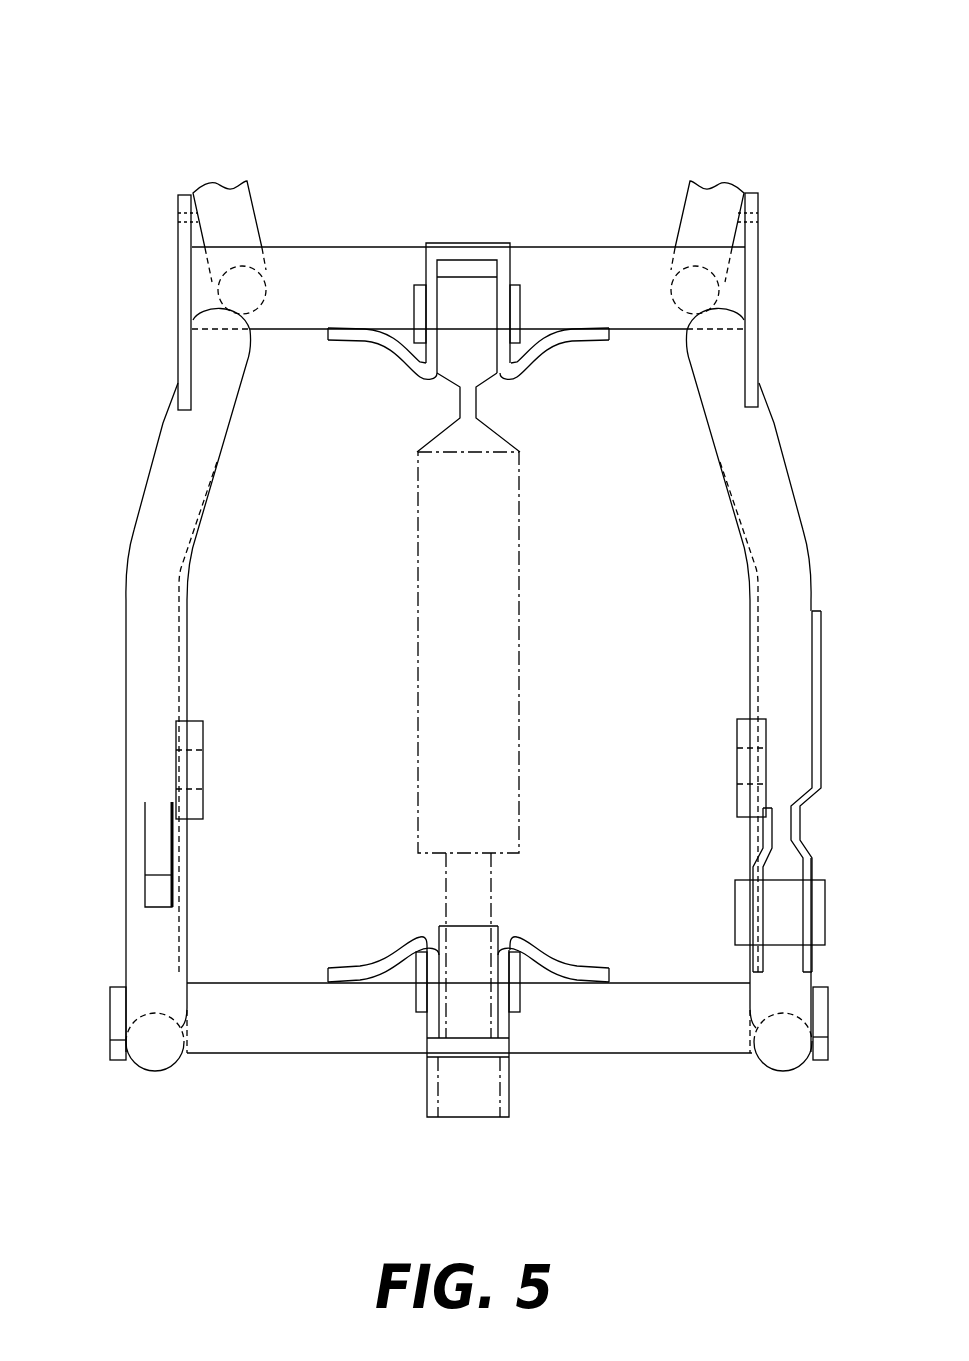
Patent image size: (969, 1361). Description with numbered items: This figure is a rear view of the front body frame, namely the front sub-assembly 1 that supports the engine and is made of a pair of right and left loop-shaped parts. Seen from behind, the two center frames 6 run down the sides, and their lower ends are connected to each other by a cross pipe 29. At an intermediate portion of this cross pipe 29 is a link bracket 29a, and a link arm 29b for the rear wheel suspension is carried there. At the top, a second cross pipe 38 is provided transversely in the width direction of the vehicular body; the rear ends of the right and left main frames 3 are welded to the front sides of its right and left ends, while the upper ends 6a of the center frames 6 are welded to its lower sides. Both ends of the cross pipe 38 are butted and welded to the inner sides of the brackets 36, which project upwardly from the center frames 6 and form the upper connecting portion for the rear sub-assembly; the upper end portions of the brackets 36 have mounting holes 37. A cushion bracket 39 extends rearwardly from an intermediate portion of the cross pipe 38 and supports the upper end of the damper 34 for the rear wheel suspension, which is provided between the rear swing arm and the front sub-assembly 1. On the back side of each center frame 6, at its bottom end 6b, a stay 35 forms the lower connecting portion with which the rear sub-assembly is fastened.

The front sub-assembly 1 is at (408, 92).
The main frame 3 is at (222, 193).
The center frame 6 is at (138, 622).
The upper end of center frame 6a is at (178, 377).
The bottom end of center frame 6b is at (126, 940).
The cross pipe 29 is at (300, 1046).
The link bracket 29a is at (513, 1027).
The link arm 29b is at (470, 1118).
The damper 34 is at (420, 614).
The stay 35 is at (143, 845).
The bracket 36 is at (178, 290).
The mounting holes 37 is at (178, 218).
The cross pipe 38 is at (357, 262).
The cushion bracket 39 is at (444, 237).